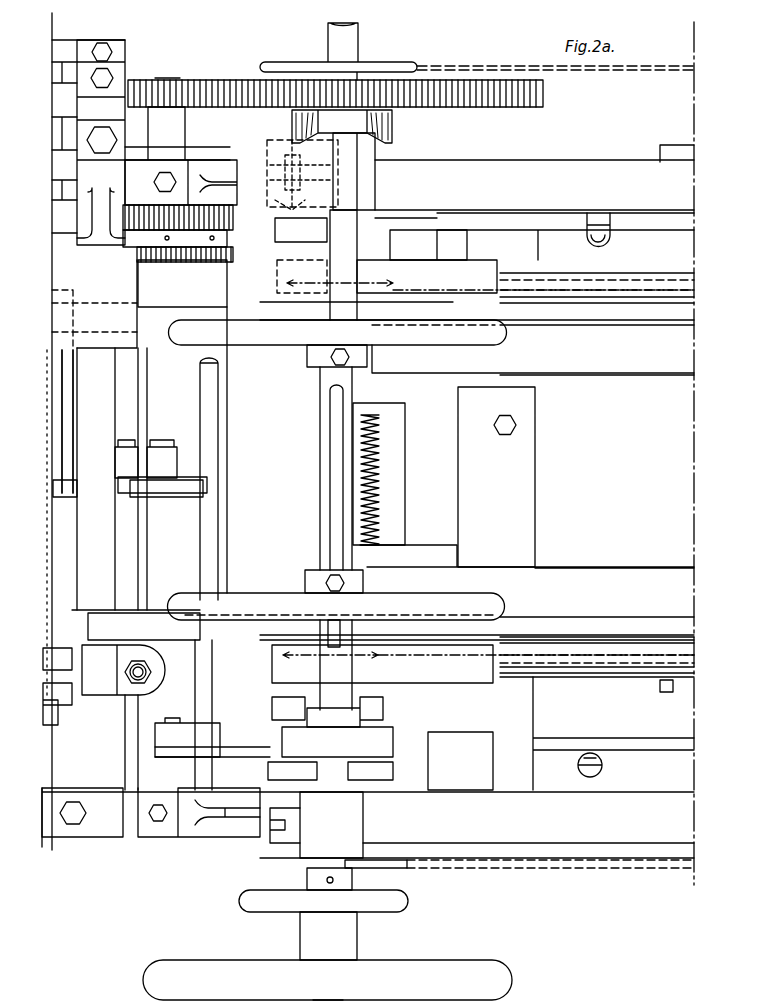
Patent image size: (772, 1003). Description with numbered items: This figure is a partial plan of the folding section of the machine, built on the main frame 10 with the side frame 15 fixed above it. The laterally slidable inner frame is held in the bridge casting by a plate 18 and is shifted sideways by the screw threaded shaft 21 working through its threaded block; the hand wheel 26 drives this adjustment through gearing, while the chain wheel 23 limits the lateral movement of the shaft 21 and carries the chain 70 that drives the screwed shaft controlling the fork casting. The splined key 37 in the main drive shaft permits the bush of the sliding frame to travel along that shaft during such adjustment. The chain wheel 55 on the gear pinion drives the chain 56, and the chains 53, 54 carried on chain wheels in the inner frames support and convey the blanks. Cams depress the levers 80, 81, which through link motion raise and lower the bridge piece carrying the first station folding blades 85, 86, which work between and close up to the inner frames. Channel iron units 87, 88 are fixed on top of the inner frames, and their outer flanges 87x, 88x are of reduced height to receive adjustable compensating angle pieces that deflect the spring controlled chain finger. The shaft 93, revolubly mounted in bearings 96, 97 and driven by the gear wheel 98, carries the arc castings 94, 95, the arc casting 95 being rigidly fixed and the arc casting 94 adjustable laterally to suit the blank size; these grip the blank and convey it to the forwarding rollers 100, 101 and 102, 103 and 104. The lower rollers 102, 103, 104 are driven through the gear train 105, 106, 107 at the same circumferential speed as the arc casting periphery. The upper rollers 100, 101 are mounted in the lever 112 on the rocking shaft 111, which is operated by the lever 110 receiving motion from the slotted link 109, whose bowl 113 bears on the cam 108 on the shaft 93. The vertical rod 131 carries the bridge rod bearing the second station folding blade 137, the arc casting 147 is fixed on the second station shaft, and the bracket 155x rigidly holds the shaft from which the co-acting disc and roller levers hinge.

The bracket 155x is at (117, 72).
The gear train 105 is at (172, 95).
The chain wheel 55 is at (405, 65).
The chain 56 is at (507, 65).
The gear wheel 98 is at (374, 126).
The side frame 15 is at (542, 180).
The bearing 97 is at (363, 190).
The gear train 107 is at (218, 220).
The gear train 106 is at (182, 283).
The outer channel flange 88x is at (553, 270).
The lever 81 is at (630, 220).
The chain 54 is at (647, 287).
The channel iron unit 88 is at (547, 293).
The first station folding blade 86 is at (654, 350).
The arc casting 95 is at (280, 330).
The shaft 93 is at (338, 372).
The splined key 37 is at (332, 462).
The screw threaded shaft 21 is at (388, 500).
The plate 18 is at (507, 482).
The arc casting 147 is at (66, 378).
The lower forwarding roller 102 is at (128, 403).
The forwarding roller 101 is at (165, 467).
The forwarding roller 100 is at (125, 464).
The rocking shaft 111 is at (208, 464).
The lever 112 is at (130, 487).
The lower forwarding roller 104 is at (205, 530).
The arc casting 94 is at (287, 598).
The lower forwarding roller 103 is at (160, 553).
The second station folding blade 137 is at (50, 600).
The channel iron unit 87 is at (565, 655).
The first station folding blade 85 is at (652, 590).
The outer channel flange 87x is at (556, 686).
The chain 53 is at (594, 690).
The lever 80 is at (612, 748).
The vertical rod 131 is at (135, 680).
The lever 110 is at (190, 735).
The slotted link 109 is at (247, 750).
The bowl 113 is at (382, 740).
The cam 108 is at (302, 738).
The bearing 96 is at (363, 814).
The chain wheel 23 is at (395, 862).
The hand wheel 26 is at (395, 903).
The frame 10 is at (515, 858).
The chain 70 is at (560, 868).